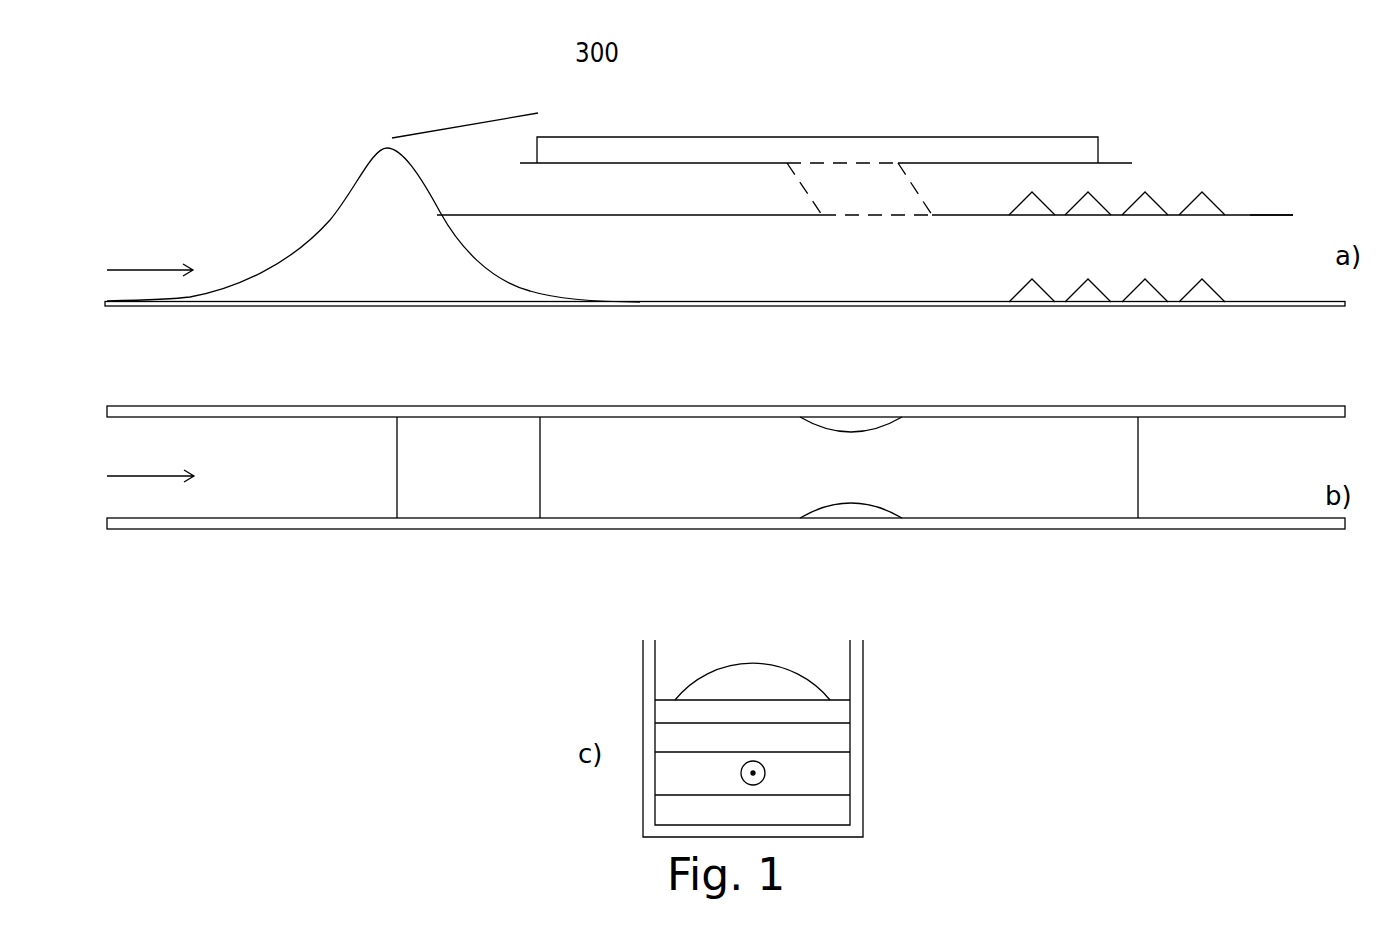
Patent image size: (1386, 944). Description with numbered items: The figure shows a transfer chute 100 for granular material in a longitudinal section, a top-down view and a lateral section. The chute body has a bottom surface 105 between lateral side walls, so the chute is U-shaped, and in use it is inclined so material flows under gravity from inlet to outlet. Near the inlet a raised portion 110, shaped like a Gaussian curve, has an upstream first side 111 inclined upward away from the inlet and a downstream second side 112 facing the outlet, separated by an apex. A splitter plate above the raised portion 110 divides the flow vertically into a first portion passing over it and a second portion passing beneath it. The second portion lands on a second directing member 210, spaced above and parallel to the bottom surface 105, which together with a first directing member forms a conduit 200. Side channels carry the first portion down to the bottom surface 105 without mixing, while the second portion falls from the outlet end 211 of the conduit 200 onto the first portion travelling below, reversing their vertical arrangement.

The transfer chute 100 is at (725, 202).
The bottom surface 105 is at (190, 297).
The raised portion 110 is at (373, 200).
The first side of raised portion 111 is at (362, 203).
The second side of raised portion 112 is at (410, 205).
The conduit 200 is at (890, 212).
The second directing member 210 is at (620, 217).
The outlet end of conduit 211 is at (1277, 215).